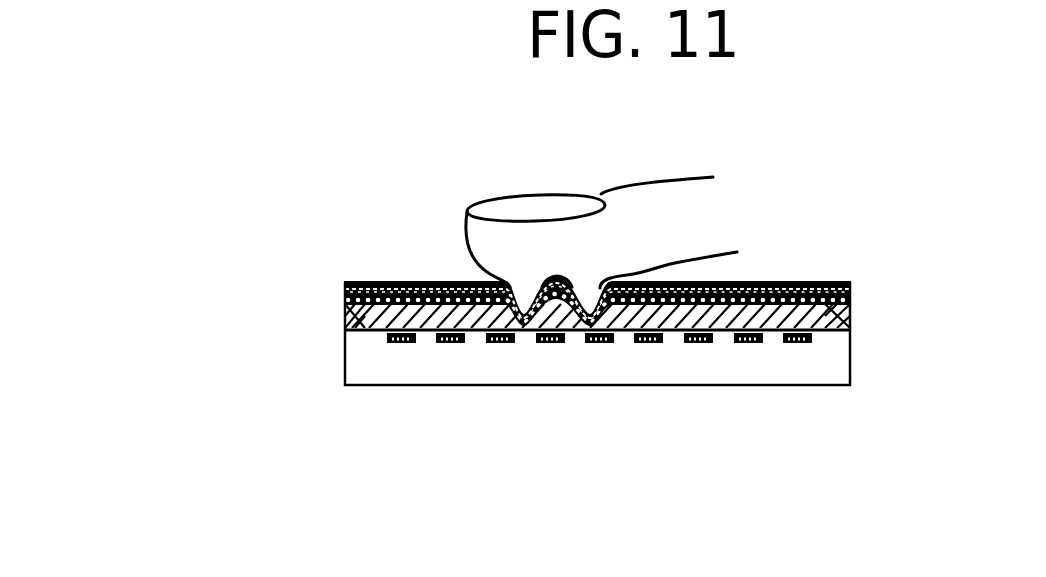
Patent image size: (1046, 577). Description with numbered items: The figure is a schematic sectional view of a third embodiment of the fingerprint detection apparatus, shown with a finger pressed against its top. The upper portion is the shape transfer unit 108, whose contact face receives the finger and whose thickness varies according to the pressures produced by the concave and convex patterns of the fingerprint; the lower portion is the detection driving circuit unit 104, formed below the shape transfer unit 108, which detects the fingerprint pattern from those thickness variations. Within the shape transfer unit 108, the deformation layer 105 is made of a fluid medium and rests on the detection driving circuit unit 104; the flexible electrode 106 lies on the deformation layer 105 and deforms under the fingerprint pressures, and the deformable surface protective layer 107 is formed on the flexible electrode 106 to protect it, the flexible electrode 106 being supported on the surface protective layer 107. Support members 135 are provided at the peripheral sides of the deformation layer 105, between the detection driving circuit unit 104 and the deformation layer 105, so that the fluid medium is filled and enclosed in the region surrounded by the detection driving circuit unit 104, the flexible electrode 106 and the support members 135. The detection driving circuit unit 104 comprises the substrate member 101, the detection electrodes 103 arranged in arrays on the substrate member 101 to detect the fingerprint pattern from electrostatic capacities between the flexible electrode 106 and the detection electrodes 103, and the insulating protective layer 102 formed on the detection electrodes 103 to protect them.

The substrate member 101 is at (417, 373).
The insulating protective layer 102 is at (345, 347).
The detection electrodes 103 is at (398, 347).
The detection driving circuit unit 104 is at (207, 355).
The deformation layer 105 is at (345, 288).
The flexible electrode 106 is at (457, 286).
The surface protective layer 107 is at (405, 282).
The shape transfer unit 108 is at (205, 203).
The support members 135 is at (838, 330).